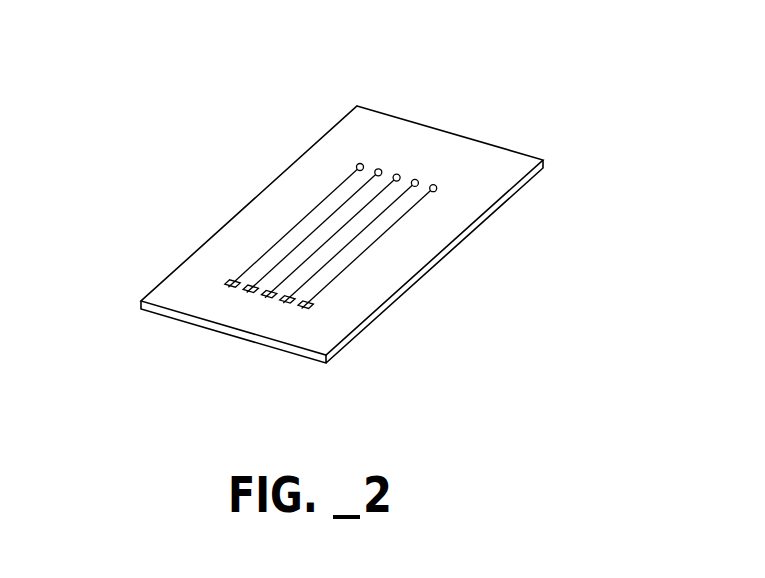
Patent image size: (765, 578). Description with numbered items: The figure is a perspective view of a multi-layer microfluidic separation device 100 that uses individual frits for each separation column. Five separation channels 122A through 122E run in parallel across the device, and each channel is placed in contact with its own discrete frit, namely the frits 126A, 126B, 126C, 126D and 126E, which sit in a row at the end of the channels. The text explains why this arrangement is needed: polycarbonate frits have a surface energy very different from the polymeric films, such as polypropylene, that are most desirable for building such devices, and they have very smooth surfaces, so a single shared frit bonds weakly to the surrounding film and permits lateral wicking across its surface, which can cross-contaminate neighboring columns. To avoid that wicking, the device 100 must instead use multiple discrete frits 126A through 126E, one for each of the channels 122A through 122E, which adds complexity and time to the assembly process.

The device 100 is at (515, 103).
The separation channel 122A is at (294, 225).
The separation channel 122E is at (405, 213).
The discrete frit 126A is at (230, 283).
The discrete frit 126B is at (248, 291).
The discrete frit 126C is at (268, 296).
The discrete frit 126D is at (287, 302).
The discrete frit 126E is at (312, 306).